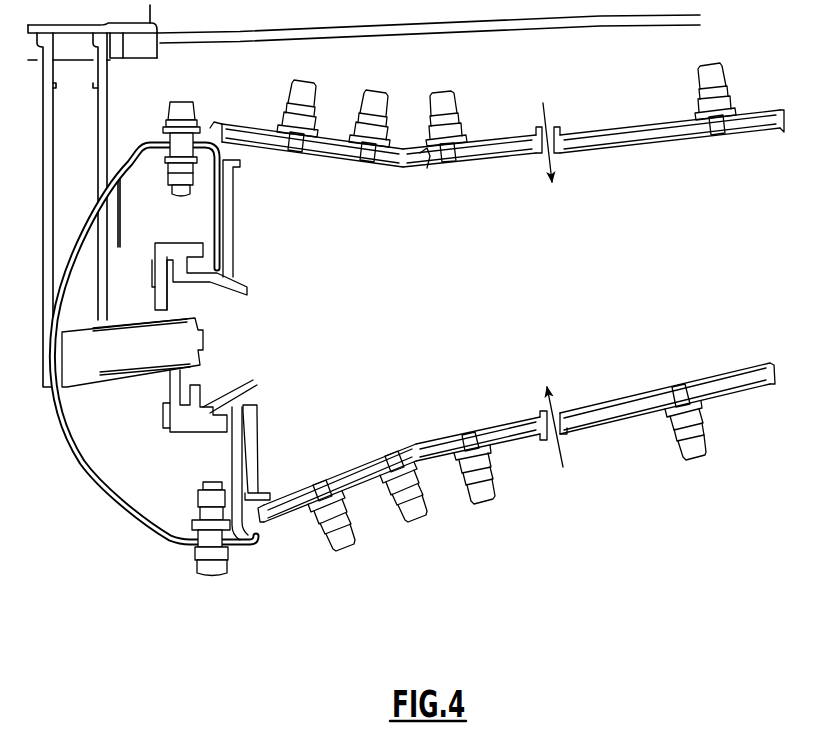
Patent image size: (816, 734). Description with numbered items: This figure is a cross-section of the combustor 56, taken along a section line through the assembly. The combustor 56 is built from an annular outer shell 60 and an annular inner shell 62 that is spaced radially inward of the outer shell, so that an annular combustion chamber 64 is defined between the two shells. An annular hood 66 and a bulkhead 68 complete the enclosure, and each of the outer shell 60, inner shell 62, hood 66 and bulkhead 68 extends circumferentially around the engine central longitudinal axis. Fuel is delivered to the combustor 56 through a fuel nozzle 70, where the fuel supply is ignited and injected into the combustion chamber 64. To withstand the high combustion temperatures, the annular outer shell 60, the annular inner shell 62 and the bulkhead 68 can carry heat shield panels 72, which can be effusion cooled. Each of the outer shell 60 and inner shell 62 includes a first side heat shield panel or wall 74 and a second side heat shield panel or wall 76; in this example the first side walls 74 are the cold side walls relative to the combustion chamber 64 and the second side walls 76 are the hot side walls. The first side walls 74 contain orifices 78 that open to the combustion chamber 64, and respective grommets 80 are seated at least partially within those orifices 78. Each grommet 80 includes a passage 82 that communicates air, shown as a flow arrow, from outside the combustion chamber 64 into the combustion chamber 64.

The combustor 56 is at (406, 329).
The annular outer shell 60 is at (490, 136).
The annular inner shell 62 is at (428, 468).
The annular combustion chamber 64 is at (505, 318).
The annular hood 66 is at (95, 485).
The bulkhead 68 is at (238, 233).
The fuel nozzle 70 is at (128, 392).
The heat shield panels 72 is at (427, 160).
The first side heat shield panel or wall 74 is at (608, 126).
The second side heat shield panel or wall 76 is at (608, 152).
The orifices 78 is at (568, 127).
The grommets 80 is at (528, 162).
The passage 82 is at (547, 108).